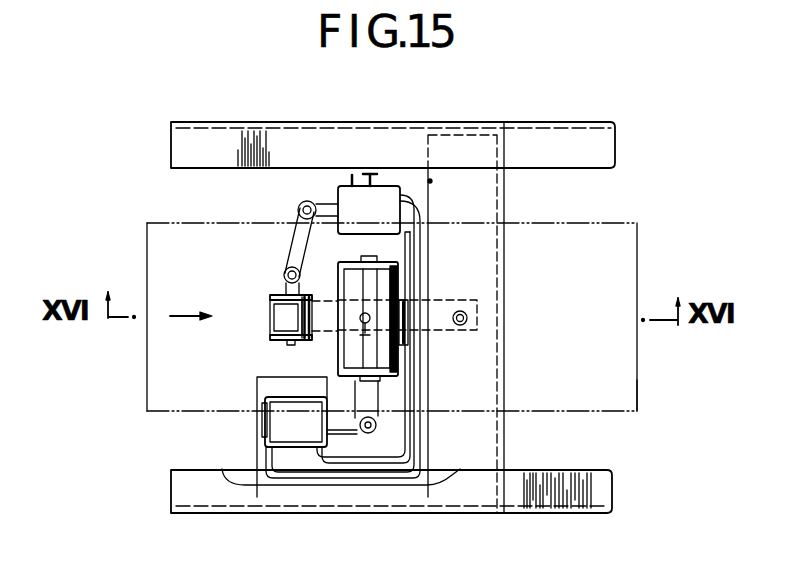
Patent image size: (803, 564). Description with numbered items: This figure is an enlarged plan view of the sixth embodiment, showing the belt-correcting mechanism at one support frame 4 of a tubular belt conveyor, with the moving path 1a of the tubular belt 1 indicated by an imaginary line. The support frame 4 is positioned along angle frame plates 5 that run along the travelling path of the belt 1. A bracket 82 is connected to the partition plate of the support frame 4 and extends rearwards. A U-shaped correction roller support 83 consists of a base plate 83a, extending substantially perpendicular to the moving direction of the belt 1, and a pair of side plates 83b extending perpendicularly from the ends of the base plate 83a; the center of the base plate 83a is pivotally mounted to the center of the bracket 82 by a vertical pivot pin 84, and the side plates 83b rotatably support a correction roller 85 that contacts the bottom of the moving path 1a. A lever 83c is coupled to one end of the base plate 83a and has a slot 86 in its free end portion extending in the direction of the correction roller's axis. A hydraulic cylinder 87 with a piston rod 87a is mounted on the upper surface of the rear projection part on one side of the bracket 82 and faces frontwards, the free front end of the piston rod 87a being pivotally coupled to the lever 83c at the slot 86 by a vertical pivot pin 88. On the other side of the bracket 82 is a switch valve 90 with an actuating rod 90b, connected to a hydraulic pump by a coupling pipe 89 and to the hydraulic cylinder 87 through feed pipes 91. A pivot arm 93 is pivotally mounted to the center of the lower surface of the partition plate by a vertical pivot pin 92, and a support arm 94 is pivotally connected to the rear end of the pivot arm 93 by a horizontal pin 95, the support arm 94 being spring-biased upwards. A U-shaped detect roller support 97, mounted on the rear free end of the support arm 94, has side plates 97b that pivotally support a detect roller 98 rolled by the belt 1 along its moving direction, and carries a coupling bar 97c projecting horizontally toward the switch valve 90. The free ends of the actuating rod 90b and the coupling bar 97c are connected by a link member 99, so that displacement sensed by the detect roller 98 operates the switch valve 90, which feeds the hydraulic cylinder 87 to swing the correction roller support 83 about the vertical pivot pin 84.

The tubular belt 1 is at (637, 271).
The moving path 1a is at (637, 385).
The support frame 4 is at (505, 200).
The angle frame plate 5 is at (615, 150).
The bracket 82 is at (431, 180).
The correction roller support 83 is at (398, 261).
The base plate 83a is at (402, 288).
The side plates 83b is at (405, 262).
The lever 83c is at (383, 404).
The vertical pivot pin 84 is at (368, 318).
The correction roller 85 is at (396, 368).
The slot 86 is at (374, 431).
The hydraulic cylinder 87 is at (262, 429).
The piston rod 87a is at (343, 427).
The vertical pivot pin 88 is at (407, 432).
The coupling pipe 89 is at (374, 177).
The switch valve 90 is at (352, 181).
The actuating rod 90b is at (312, 200).
The feed pipes 91 is at (377, 479).
The vertical pivot pin 92 is at (470, 318).
The pivot arm 93 is at (440, 331).
The support arm 94 is at (325, 340).
The horizontal pin 95 is at (410, 345).
The detect roller support 97 is at (270, 338).
The side plates 97b is at (271, 294).
The coupling bar 97c is at (284, 284).
The detect roller 98 is at (273, 311).
The link member 99 is at (293, 228).